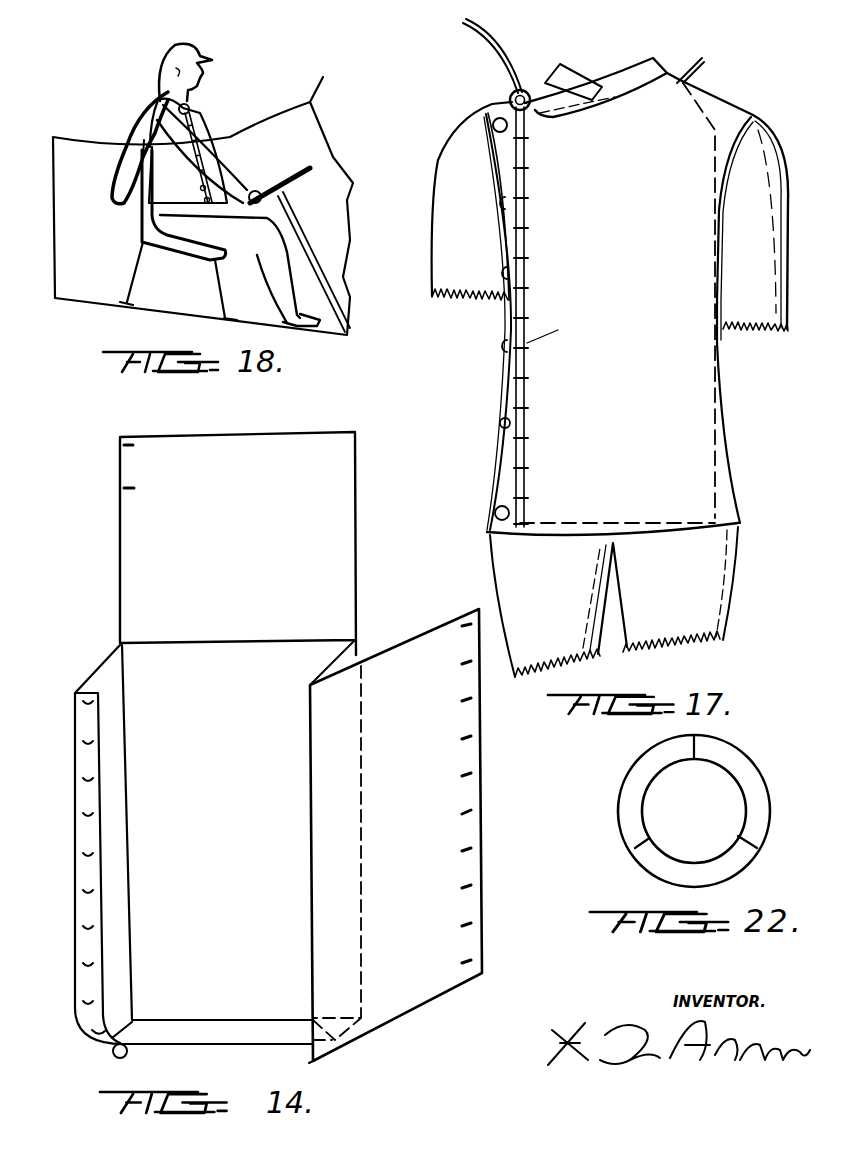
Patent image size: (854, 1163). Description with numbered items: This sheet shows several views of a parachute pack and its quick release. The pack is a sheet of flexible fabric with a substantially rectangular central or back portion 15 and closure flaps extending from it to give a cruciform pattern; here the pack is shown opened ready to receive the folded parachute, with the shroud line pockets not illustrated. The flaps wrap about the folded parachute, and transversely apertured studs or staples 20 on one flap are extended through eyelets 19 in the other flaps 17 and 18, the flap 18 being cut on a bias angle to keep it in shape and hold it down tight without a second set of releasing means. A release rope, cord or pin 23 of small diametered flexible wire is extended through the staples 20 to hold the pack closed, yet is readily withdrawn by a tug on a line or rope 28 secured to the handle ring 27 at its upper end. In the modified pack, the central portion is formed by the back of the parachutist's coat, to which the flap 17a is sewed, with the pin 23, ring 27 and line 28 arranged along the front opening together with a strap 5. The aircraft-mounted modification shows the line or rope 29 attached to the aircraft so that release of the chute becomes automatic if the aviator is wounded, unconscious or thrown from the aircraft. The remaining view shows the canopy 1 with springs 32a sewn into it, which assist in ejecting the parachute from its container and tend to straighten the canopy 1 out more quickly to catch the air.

In FIG. 22, the canopy 1 is at (767, 782).
In FIG. 17, the shoulder strap 5 is at (697, 73).
In FIG. 14, the central or back portion 15 is at (155, 790).
In FIG. 14, the flap 17 is at (438, 837).
In FIG. 18, the flap 17a is at (215, 155).
In FIG. 17, the flap 17a is at (593, 428).
In FIG. 14, the flap 18 is at (360, 480).
In FIG. 14, the eyelets 19 is at (125, 490).
In FIG. 14, the studs or staples 20 is at (83, 891).
In FIG. 18, the release rope, cord or pin 23 is at (194, 120).
In FIG. 17, the release rope, cord or pin 23 is at (527, 303).
In FIG. 18, the handle ring 27 is at (187, 105).
In FIG. 17, the handle ring 27 is at (510, 97).
In FIG. 18, the line or rope 28 is at (147, 110).
In FIG. 17, the line or rope 28 is at (510, 53).
In FIG. 18, the line or rope attached to the aircraft 29 is at (141, 143).
In FIG. 22, the springs 32a is at (637, 847).